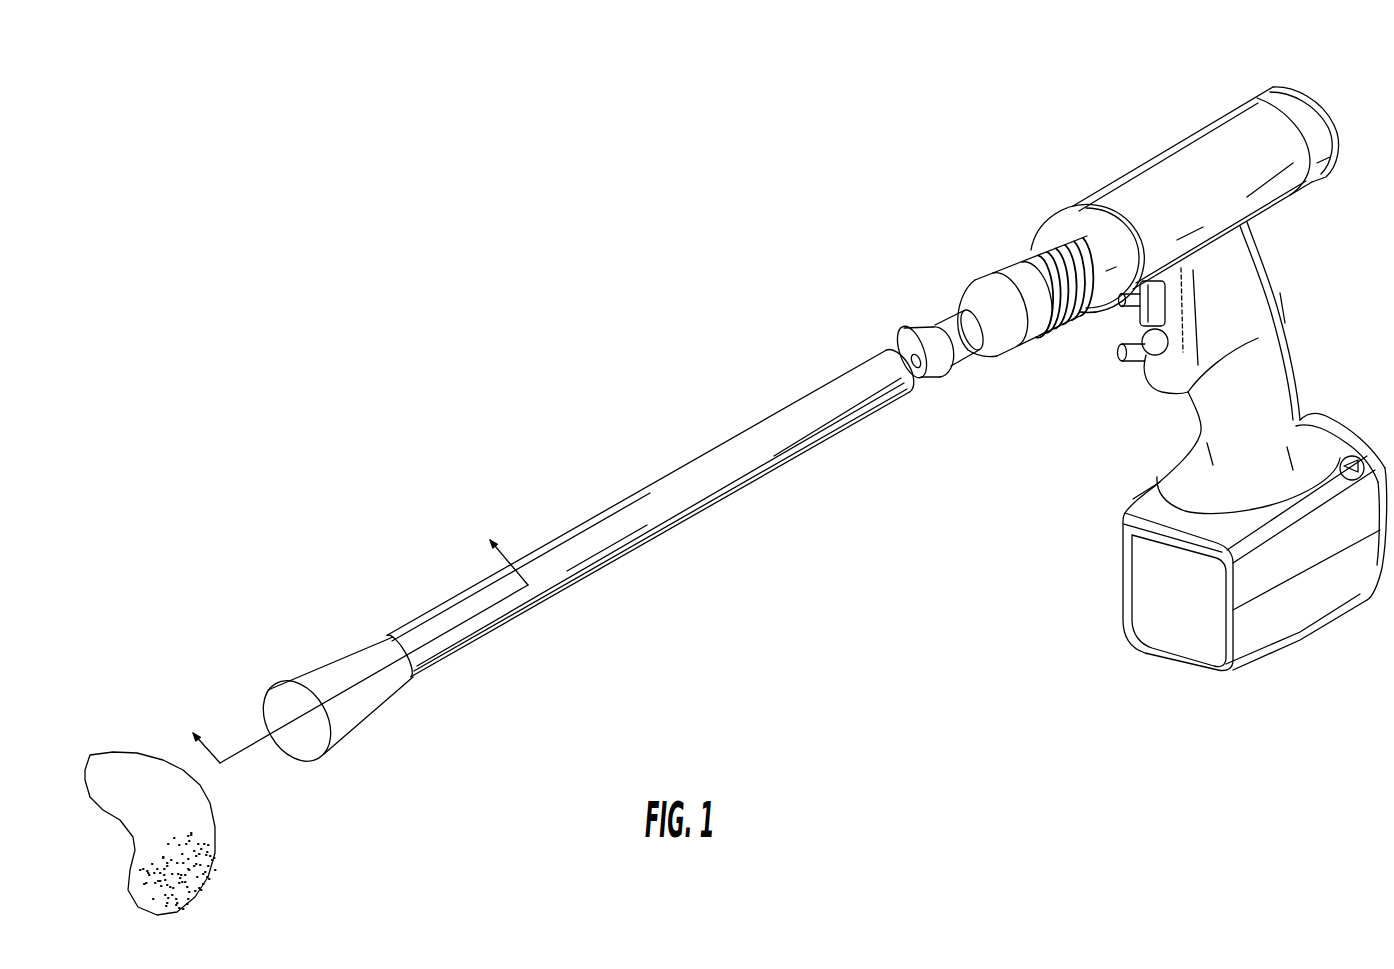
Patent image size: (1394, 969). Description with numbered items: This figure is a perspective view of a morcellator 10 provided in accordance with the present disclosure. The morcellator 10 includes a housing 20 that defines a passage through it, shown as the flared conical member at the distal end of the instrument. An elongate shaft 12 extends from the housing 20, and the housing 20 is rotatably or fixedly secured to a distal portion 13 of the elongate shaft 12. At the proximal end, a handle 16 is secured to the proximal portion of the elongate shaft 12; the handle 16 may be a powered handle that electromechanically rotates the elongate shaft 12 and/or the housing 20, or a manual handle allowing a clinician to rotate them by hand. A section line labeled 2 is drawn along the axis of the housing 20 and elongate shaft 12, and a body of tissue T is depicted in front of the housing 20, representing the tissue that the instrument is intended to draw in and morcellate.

The morcellator 10 is at (813, 137).
The elongate shaft 12 is at (777, 455).
The distal portion 13 is at (496, 628).
The handle 16 is at (1178, 140).
The housing 20 is at (364, 726).
The section line 2- 2 is at (356, 634).
The target tissue T is at (204, 830).